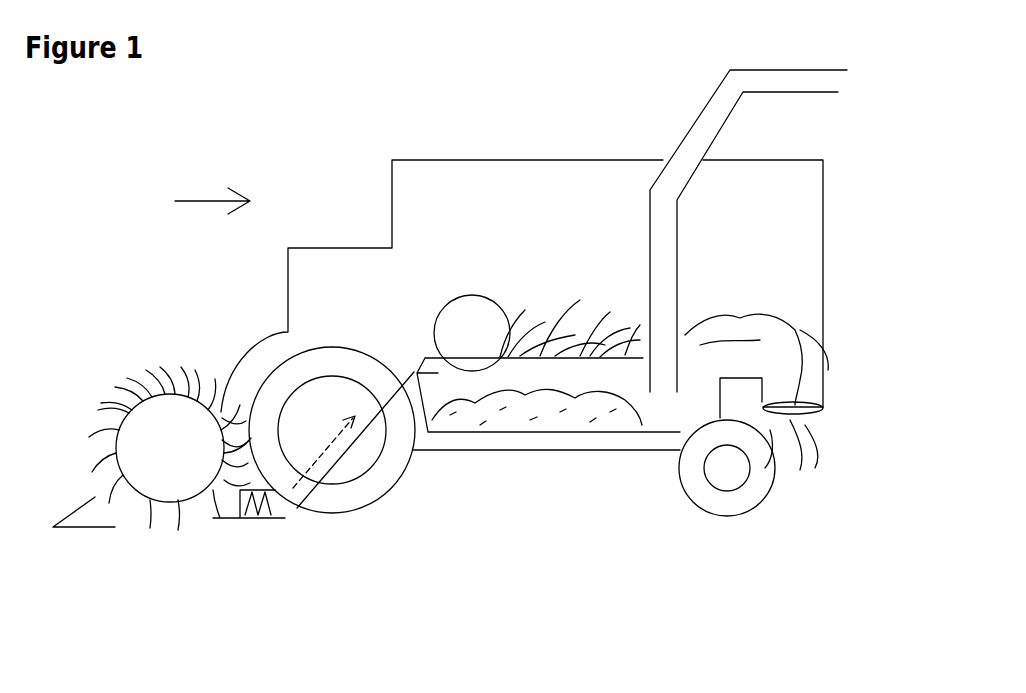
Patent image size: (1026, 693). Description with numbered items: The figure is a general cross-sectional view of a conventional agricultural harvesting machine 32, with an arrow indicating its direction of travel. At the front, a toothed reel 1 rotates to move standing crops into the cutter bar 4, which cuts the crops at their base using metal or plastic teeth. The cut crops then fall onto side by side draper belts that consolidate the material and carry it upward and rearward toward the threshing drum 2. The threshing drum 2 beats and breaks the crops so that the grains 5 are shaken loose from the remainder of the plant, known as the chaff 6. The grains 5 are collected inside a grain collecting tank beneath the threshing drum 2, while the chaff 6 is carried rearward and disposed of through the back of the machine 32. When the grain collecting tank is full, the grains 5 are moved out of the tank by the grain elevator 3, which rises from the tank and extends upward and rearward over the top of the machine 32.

The reel 1 is at (167, 445).
The threshing drum 2 is at (468, 328).
The grain elevator 3 is at (667, 245).
The cutter bar 4 is at (273, 495).
The grains 5 is at (482, 422).
The chaff 6 is at (810, 447).
The harvesting machine 32 is at (195, 202).